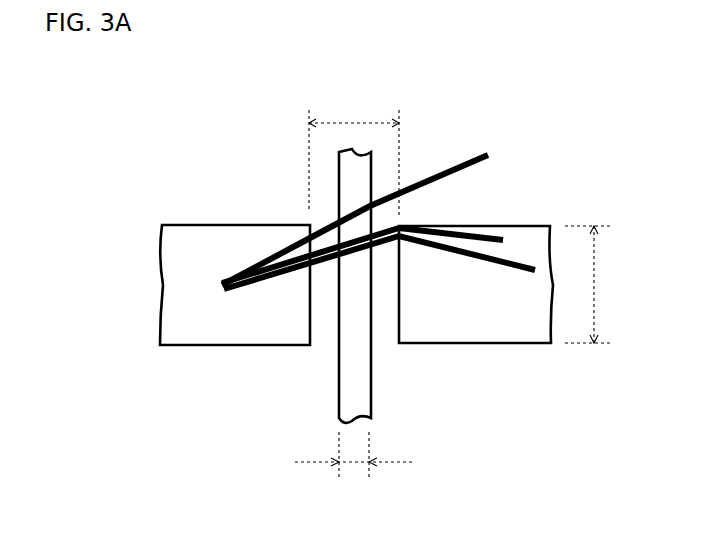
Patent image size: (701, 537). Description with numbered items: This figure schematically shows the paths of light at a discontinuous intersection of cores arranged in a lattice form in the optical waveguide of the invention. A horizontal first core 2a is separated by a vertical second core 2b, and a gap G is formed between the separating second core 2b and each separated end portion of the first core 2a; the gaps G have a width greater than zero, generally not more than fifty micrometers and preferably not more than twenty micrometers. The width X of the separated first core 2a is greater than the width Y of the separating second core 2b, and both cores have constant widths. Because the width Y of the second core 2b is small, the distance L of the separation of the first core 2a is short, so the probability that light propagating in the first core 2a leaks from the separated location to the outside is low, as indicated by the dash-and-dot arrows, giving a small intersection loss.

The first core 2a is at (220, 240).
The second core 2b is at (355, 182).
The distance of separation L is at (354, 151).
The width of the separated first core X is at (596, 284).
The width of the separating second core Y is at (355, 468).
The gap G is at (323, 300).